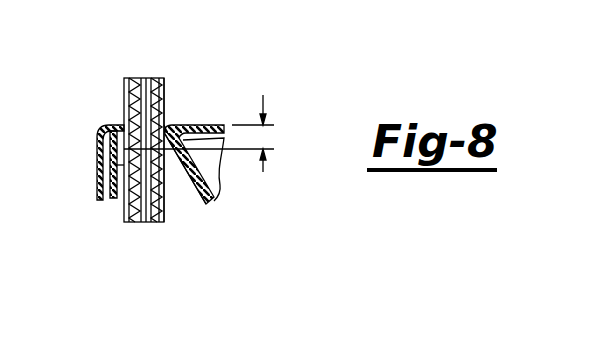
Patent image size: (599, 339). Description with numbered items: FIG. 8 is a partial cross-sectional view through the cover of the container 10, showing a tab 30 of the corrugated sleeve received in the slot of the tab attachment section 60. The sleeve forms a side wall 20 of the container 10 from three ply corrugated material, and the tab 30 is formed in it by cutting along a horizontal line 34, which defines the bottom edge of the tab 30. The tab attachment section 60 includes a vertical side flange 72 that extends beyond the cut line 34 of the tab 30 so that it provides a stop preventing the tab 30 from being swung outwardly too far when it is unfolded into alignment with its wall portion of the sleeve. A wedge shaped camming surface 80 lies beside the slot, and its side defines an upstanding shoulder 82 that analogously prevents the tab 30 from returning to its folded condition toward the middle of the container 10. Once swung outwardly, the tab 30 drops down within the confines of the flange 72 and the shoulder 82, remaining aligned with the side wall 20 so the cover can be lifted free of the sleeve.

The container 10 is at (210, 193).
The side wall 20 is at (163, 212).
The tab 30 is at (166, 126).
The horizontal line 34 is at (168, 126).
The tab attachment section 60 is at (88, 113).
The vertical side flange 72 is at (124, 177).
The camming surface 80 is at (205, 125).
The shoulder 82 is at (172, 134).